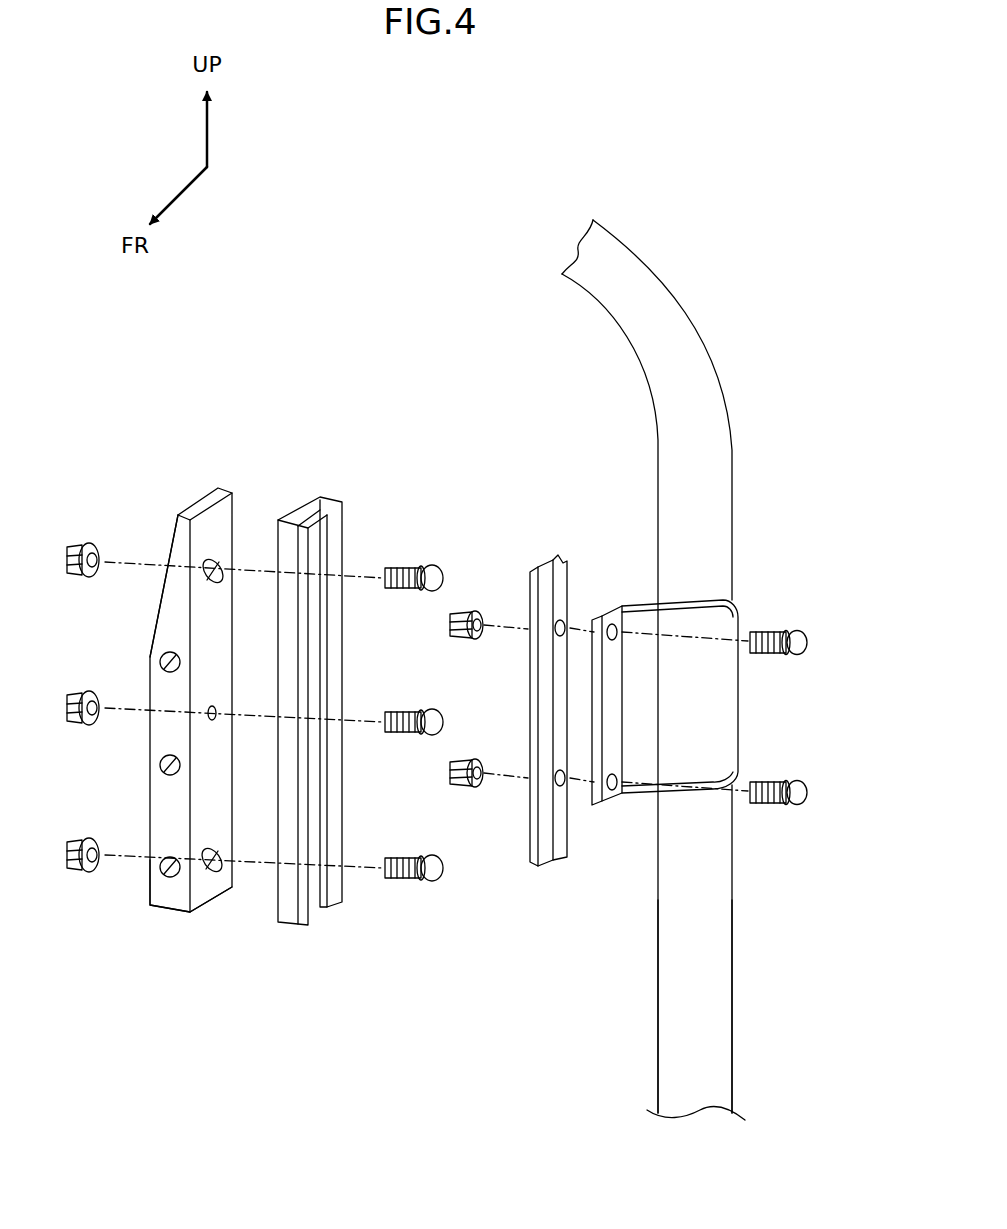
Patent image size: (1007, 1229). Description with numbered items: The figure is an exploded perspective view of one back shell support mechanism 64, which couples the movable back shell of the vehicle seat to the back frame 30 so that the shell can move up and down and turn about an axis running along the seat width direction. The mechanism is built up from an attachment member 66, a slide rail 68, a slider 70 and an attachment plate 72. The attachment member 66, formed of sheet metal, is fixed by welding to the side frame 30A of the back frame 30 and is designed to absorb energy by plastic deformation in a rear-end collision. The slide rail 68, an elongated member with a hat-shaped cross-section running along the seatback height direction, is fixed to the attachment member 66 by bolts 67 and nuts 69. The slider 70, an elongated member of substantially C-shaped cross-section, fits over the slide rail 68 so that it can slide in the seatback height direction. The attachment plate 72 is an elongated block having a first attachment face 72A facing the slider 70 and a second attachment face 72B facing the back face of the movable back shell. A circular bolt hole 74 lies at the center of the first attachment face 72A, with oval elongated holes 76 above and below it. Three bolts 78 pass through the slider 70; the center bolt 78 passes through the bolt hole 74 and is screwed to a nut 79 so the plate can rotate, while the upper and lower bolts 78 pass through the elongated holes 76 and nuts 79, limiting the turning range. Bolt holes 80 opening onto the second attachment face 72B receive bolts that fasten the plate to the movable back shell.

The back frame 30 is at (666, 326).
The side frame 30A is at (716, 944).
The back shell support mechanism 64 is at (413, 346).
The attachment member 66 is at (720, 620).
The bolt 67 is at (808, 645).
The slide rail 68 is at (545, 864).
The nut 69 is at (452, 641).
The slider 70 is at (295, 498).
The attachment plate 72 is at (165, 693).
The first attachment face 72A is at (208, 598).
The second attachment face 72B is at (160, 908).
The bolt hole 74 is at (206, 716).
The elongated hole 76 is at (210, 565).
The bolt 78 is at (410, 590).
The nut 79 is at (75, 547).
The bolt hole 80 is at (160, 662).